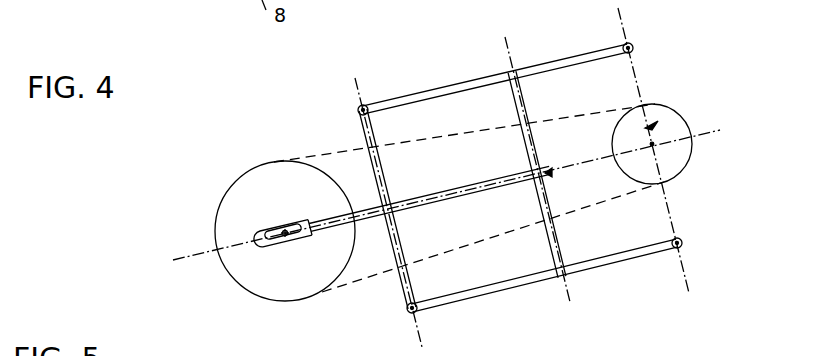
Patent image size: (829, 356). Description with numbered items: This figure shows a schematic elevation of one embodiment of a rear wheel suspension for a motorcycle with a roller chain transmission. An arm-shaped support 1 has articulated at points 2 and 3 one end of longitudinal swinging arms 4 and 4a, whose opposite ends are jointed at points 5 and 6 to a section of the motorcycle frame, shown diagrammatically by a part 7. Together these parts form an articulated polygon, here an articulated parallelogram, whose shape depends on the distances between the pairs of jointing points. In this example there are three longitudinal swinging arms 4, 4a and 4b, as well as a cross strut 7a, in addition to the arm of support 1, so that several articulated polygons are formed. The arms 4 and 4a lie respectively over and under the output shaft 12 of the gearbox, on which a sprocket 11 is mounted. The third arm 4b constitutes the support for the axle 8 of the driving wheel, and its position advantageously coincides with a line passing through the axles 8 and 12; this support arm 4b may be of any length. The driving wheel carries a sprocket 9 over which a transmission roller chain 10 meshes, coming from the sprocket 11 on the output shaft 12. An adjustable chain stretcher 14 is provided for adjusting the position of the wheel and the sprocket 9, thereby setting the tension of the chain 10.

The support 1 is at (375, 163).
The articulation point 2 is at (364, 107).
The articulation point 3 is at (404, 305).
The arm 4 is at (437, 88).
The arm 4a is at (463, 292).
The support arm 4b is at (438, 194).
The jointing point 5 is at (633, 47).
The jointing point 6 is at (680, 243).
The frame section 7 is at (650, 126).
The cross strut 7a is at (525, 120).
The axle 8 is at (270, 237).
The sprocket 9 is at (267, 300).
The transmission roller chain 10 is at (482, 247).
The sprocket 11 is at (690, 137).
The output shaft 12 is at (656, 146).
The adjustable chain stretcher 14 is at (284, 230).